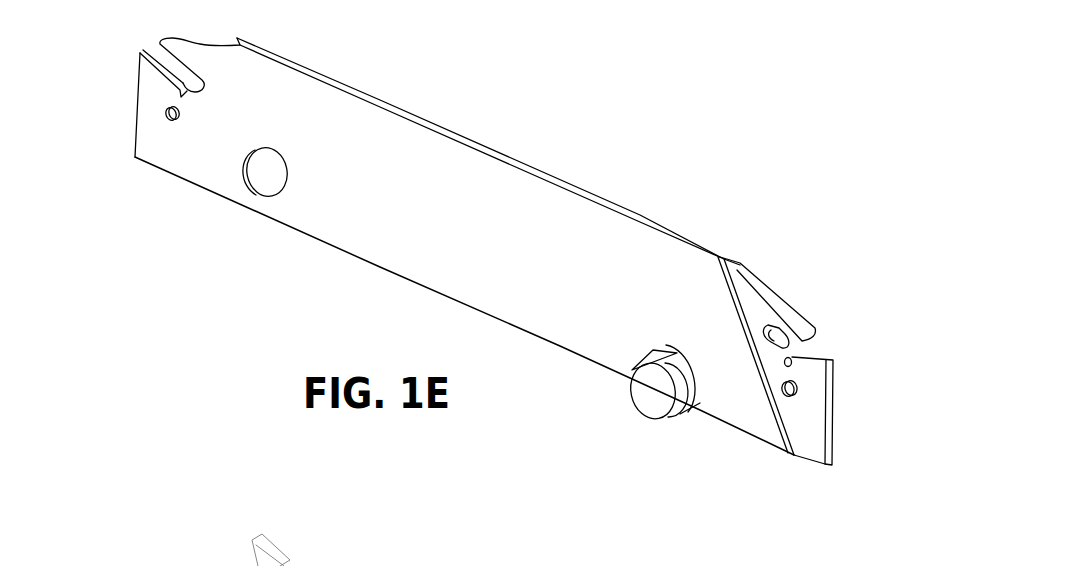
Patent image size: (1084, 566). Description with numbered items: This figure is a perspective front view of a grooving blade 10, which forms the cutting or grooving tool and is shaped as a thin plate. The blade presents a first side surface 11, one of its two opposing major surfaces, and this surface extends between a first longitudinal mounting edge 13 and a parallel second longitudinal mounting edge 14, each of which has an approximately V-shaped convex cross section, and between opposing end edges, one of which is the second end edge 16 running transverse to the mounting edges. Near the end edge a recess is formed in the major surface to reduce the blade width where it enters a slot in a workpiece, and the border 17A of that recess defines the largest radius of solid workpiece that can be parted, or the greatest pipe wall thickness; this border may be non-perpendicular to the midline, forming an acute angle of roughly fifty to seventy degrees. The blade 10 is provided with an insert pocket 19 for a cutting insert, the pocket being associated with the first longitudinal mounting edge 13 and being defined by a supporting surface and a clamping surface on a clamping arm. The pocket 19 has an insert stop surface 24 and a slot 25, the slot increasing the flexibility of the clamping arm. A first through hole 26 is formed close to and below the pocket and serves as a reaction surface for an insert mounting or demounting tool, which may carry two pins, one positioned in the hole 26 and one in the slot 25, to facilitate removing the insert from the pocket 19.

The grooving blade 10 is at (624, 113).
The first side surface 11 is at (562, 305).
The first longitudinal mounting edge 13 is at (458, 138).
The second longitudinal mounting edge 14 is at (323, 243).
The second end edge 16 is at (222, 565).
The border of the recess 17A is at (780, 399).
The insert pocket 19 is at (807, 348).
The insert stop surface 24 is at (789, 352).
The slot 25 is at (778, 332).
The first through hole 26 is at (168, 114).